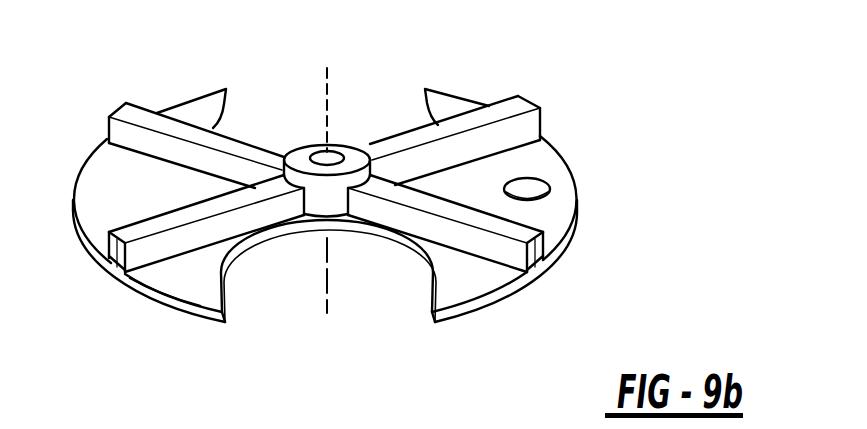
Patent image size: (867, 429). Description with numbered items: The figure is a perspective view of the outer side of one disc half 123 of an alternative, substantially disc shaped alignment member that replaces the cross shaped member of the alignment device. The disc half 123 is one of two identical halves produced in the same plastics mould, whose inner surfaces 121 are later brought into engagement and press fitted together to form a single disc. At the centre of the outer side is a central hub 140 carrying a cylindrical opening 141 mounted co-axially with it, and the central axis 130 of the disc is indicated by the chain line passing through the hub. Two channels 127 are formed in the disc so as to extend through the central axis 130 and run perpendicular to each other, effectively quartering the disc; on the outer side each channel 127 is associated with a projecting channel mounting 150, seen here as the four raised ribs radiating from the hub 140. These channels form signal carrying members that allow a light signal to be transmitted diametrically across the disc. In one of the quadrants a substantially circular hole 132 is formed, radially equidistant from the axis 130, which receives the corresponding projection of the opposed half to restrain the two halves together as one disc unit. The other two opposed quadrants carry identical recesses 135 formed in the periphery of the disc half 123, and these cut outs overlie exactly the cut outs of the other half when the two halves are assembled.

The inner surface 121 is at (470, 306).
The disc half 123 is at (157, 294).
The channel 127 is at (551, 262).
The central axis 130 is at (351, 88).
The hole 132 is at (538, 179).
The recess 135 is at (369, 283).
The central hub 140 is at (353, 149).
The cylindrical opening 141 is at (318, 151).
The channel mounting 150 is at (520, 108).